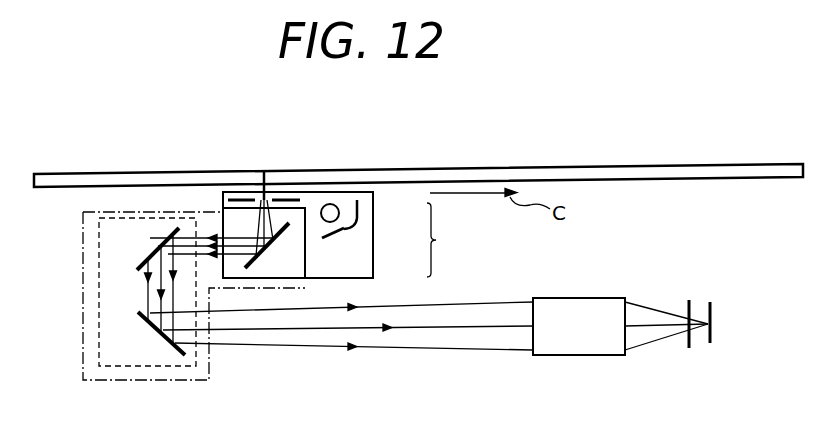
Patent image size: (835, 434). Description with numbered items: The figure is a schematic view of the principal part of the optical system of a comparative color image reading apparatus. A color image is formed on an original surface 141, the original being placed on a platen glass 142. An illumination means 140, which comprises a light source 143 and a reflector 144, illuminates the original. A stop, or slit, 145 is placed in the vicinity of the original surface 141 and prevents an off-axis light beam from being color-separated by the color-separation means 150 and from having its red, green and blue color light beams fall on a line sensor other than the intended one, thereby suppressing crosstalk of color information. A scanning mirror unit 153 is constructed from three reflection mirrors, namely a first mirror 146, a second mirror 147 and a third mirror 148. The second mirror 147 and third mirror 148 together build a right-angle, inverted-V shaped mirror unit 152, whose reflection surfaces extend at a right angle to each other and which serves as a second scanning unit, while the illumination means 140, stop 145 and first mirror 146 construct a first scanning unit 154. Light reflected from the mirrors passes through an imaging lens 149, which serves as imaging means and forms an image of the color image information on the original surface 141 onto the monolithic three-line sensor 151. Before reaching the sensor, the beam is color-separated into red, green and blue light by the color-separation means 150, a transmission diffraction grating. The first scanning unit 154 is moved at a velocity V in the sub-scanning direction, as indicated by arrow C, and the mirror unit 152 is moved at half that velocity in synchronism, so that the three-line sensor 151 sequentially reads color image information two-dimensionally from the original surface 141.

The illumination means 140 is at (447, 240).
The original surface 141 is at (170, 172).
The platen glass 142 is at (95, 178).
The light source 143 is at (340, 231).
The reflector 144 is at (362, 216).
The stop (slit) 145 is at (243, 196).
The first mirror 146 is at (284, 236).
The second mirror 147 is at (158, 248).
The third mirror 148 is at (165, 338).
The imaging lens 149 is at (586, 305).
The color-separation means 150 is at (683, 302).
The monolithic 3-line sensor 151 is at (712, 312).
The right-angle, inverted-V shaped mirror unit 152 is at (99, 307).
The scanning mirror unit 153 is at (83, 261).
The first scanning unit 154 is at (312, 192).